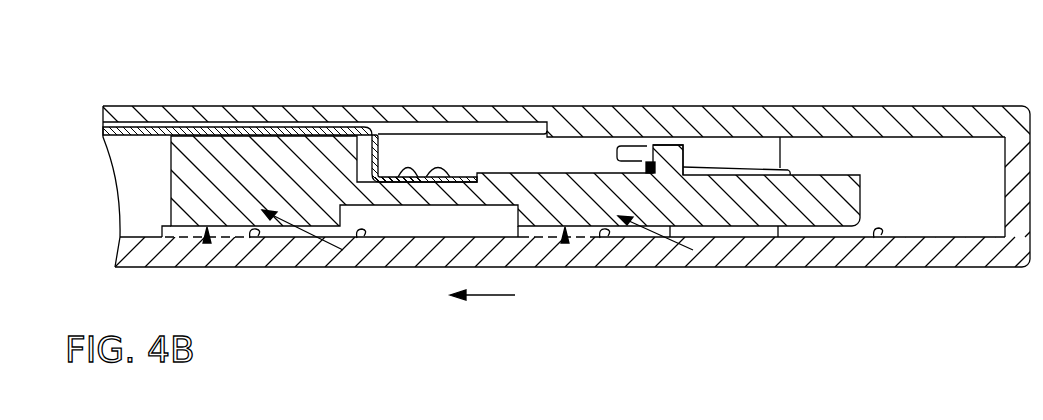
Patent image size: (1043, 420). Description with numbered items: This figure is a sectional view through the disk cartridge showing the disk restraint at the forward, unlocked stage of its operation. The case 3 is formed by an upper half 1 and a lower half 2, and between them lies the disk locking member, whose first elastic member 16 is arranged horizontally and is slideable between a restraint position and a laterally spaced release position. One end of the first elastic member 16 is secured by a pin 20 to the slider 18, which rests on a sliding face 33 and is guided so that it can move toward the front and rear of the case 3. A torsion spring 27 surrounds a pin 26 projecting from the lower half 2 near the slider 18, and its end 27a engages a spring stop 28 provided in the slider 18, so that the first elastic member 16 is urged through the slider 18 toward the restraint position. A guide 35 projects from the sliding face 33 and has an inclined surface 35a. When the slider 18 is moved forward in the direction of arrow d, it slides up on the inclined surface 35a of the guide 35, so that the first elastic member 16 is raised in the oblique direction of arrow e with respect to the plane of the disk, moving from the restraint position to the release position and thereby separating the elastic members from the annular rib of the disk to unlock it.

The upper half 1 is at (577, 118).
The lower half 2 is at (818, 253).
The case 3 is at (958, 99).
The first elastic member 16 is at (166, 130).
The slider 18 is at (722, 208).
The pin 20 is at (418, 172).
The pin 26 is at (708, 145).
The torsion spring 27 is at (735, 168).
The end of spring 27a is at (655, 162).
The spring stop 28 is at (636, 152).
The sliding face 33 is at (361, 240).
The guide 35 is at (207, 240).
The inclined surface 35a is at (258, 240).
The direction of arrow e is at (300, 240).
The direction of arrow d is at (495, 295).